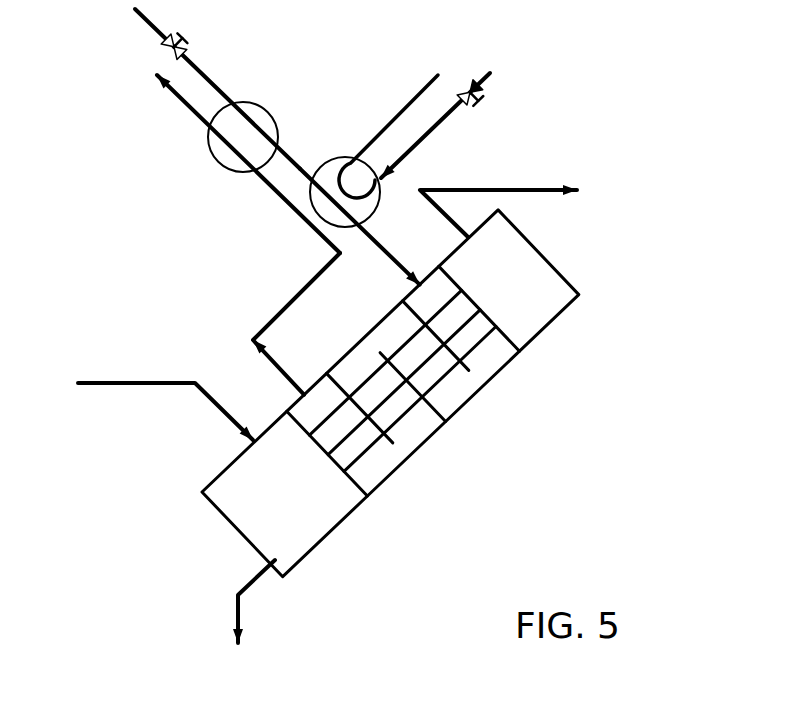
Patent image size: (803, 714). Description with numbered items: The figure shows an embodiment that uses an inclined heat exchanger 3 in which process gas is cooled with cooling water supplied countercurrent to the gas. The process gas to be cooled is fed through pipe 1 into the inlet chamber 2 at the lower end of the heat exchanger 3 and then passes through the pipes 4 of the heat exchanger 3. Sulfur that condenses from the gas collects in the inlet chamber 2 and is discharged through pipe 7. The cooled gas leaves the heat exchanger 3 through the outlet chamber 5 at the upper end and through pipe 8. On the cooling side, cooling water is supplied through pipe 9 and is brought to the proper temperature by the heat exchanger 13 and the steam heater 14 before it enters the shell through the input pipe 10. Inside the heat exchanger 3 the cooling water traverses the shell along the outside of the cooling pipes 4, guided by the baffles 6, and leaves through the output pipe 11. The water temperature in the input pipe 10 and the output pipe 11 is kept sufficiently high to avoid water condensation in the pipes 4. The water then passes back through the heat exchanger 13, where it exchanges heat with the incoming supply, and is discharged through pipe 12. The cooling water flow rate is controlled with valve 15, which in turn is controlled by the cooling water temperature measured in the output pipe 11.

The pipe 1 is at (140, 382).
The inlet chamber 2 is at (223, 515).
The heat exchanger 3 is at (425, 447).
The pipes 4 is at (370, 457).
The outlet chamber 5 is at (560, 312).
The baffles 6 is at (435, 408).
The pipe 7 is at (235, 610).
The pipe 8 is at (515, 190).
The pipe 9 is at (207, 78).
The input pipe 10 is at (373, 243).
The output pipe 11 is at (278, 313).
The pipe 12 is at (183, 103).
The heat exchanger 13 is at (260, 107).
The steam heater 14 is at (337, 157).
The valve 15 is at (170, 40).